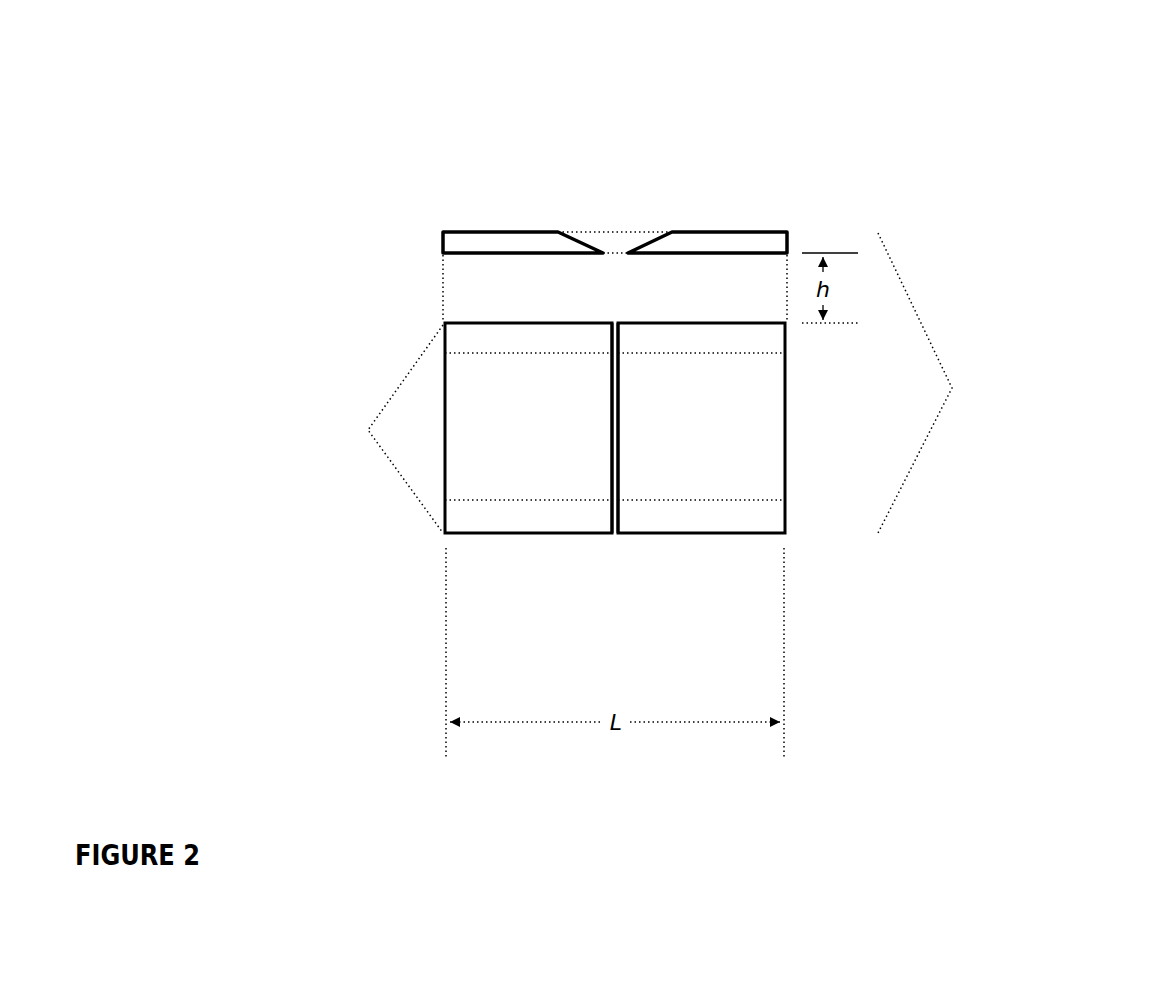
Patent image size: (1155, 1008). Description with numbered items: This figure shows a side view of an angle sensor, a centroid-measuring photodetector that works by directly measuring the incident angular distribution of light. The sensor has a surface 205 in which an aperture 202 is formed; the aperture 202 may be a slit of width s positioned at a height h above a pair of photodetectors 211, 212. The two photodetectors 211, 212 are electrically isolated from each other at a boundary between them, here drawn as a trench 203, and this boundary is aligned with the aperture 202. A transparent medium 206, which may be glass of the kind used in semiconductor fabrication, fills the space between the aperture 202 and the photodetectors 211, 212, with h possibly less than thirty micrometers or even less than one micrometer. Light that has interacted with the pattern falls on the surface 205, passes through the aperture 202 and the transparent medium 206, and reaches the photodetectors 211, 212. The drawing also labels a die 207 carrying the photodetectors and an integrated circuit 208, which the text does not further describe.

The aperture 202 is at (596, 216).
The trench 203 is at (616, 538).
The surface 205 is at (880, 213).
The transparent medium 206 is at (471, 283).
The die 207 is at (358, 432).
The integrated circuit 208 is at (1007, 403).
The photodetector 211 is at (528, 428).
The photodetector 212 is at (701, 428).